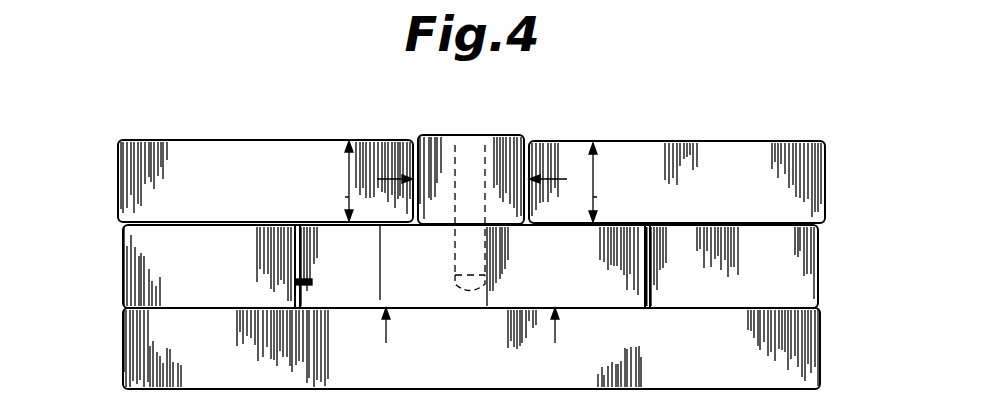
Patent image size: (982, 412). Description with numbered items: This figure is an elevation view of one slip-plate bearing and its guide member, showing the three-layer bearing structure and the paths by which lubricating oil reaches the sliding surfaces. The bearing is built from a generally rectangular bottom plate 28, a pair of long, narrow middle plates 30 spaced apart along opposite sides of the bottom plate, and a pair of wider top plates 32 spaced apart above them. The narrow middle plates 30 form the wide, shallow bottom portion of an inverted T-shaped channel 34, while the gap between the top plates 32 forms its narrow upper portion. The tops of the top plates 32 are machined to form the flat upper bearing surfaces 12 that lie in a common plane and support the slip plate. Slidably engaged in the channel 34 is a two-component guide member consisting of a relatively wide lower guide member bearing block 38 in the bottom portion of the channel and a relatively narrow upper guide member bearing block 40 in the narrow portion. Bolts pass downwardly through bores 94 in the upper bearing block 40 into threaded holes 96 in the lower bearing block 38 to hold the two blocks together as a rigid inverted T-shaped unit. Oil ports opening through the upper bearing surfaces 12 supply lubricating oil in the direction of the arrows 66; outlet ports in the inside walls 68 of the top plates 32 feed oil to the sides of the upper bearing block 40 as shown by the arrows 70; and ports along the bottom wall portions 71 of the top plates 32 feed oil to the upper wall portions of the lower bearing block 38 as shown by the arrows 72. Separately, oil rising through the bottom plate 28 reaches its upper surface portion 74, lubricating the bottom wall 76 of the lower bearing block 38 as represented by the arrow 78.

The upper bearing surface 12 is at (199, 140).
The bottom plate 28 is at (818, 350).
The middle plate 30 is at (123, 258).
The top plate 32 is at (118, 172).
The T-shaped channel 34 is at (305, 284).
The lower guide member bearing block 38 is at (648, 270).
The upper guide member bearing block 40 is at (505, 150).
The arrows 66 is at (349, 168).
The inside walls of the top plates 68 is at (523, 183).
The arrows 70 is at (380, 165).
The bottom wall portions of the top plates 71 is at (370, 226).
The arrows 72 is at (349, 197).
The upper surface portion of the bottom plate 74 is at (381, 272).
The bottom wall of the lower bearing block 76 is at (470, 308).
The arrow 78 is at (386, 334).
The bore 94 is at (455, 238).
The threaded hole 96 is at (452, 266).